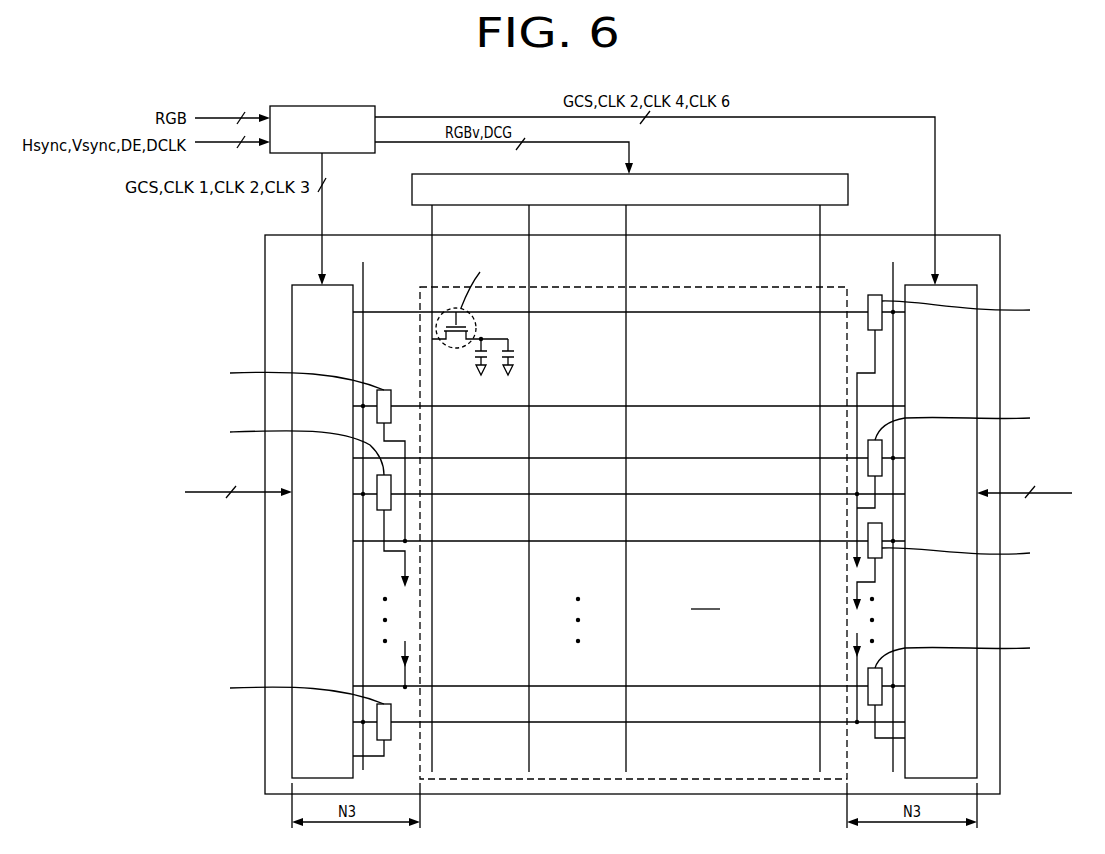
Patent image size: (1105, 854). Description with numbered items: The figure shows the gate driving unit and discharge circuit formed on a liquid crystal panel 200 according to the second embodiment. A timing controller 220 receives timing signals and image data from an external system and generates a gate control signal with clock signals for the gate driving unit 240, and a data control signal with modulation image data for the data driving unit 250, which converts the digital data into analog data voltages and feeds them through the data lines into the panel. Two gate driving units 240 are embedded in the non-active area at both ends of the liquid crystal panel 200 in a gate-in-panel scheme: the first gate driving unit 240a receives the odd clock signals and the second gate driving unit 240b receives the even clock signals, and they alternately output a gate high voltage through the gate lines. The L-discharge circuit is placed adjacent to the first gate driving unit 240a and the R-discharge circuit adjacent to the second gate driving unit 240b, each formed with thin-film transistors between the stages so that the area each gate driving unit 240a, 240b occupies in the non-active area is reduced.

The timing controller 220 is at (328, 106).
The data driving unit 250 is at (712, 174).
The liquid crystal panel 200 is at (265, 597).
The gate driving unit 240 is at (250, 331).
The first gate driving unit 240a is at (305, 285).
The second gate driving unit 240b is at (962, 285).